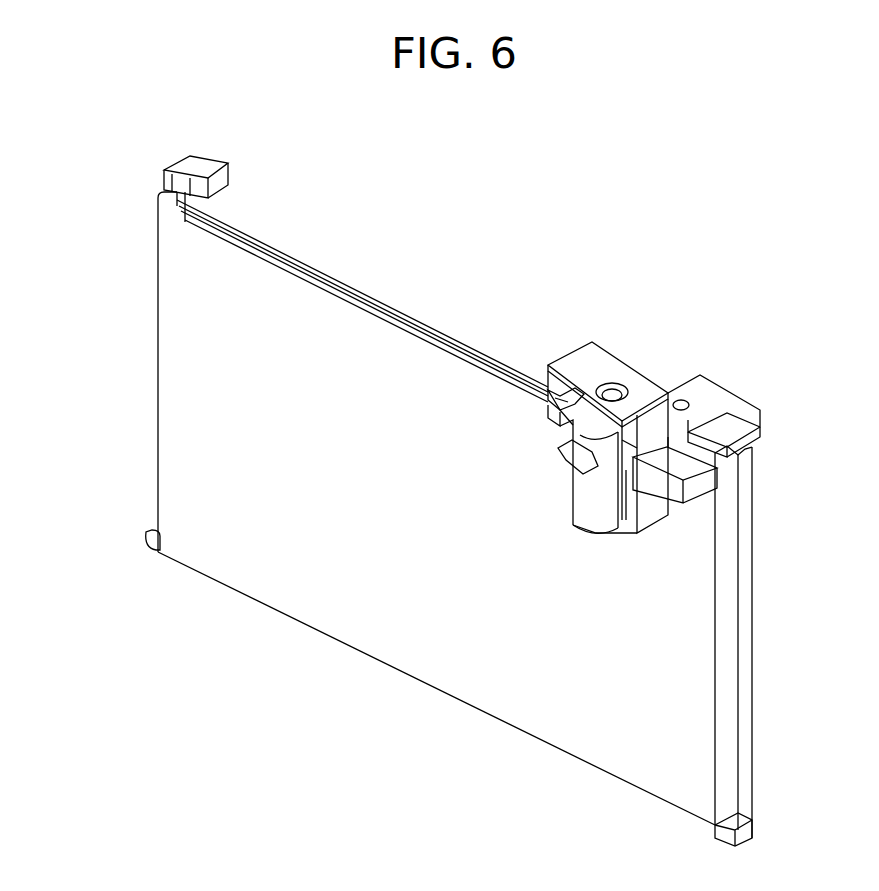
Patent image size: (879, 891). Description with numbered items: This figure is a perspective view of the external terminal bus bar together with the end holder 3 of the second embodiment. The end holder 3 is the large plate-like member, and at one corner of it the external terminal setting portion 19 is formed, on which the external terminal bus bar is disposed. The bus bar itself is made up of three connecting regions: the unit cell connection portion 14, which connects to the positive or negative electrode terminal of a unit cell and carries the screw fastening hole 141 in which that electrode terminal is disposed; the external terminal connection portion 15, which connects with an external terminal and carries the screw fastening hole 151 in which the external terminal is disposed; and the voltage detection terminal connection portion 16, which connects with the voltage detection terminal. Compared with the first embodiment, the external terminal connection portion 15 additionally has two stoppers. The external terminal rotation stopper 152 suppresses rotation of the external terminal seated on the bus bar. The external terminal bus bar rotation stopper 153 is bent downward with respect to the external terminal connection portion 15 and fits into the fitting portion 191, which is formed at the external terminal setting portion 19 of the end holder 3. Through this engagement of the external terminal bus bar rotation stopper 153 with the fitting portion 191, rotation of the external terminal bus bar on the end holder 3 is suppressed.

The end holder 3 is at (190, 412).
The unit cell connection portion 14 is at (722, 374).
The screw fastening hole 141 is at (691, 368).
The external terminal connection portion 15 is at (653, 362).
The screw fastening hole 151 is at (620, 515).
The external terminal rotation stopper 152 is at (578, 400).
The external terminal bus bar rotation stopper 153 is at (570, 465).
The voltage detection terminal connection portion 16 is at (593, 343).
The external terminal setting portion 19 is at (574, 513).
The fitting portion 191 is at (545, 424).